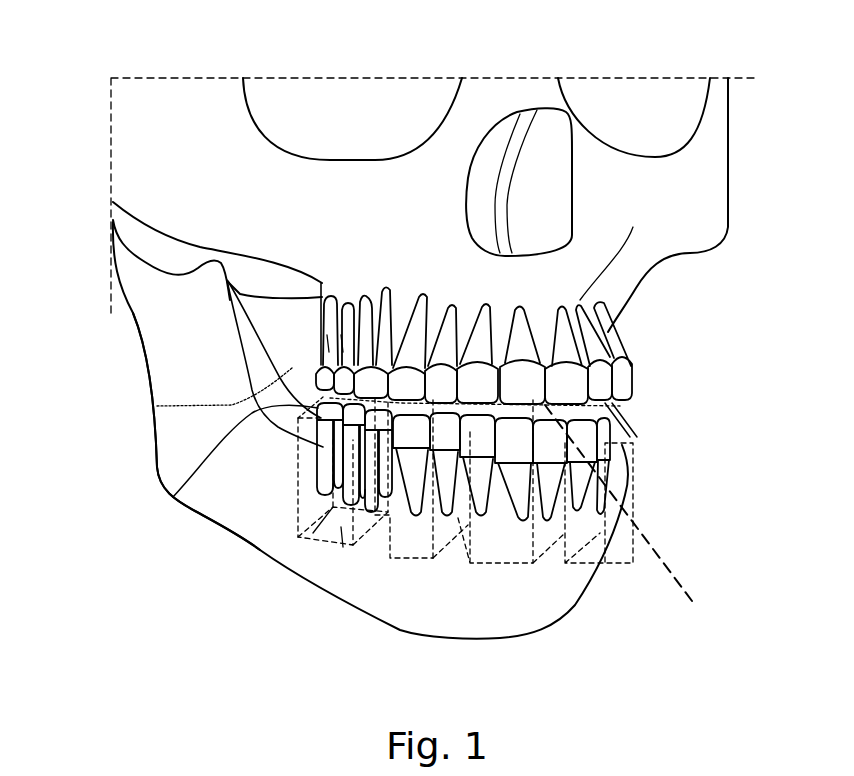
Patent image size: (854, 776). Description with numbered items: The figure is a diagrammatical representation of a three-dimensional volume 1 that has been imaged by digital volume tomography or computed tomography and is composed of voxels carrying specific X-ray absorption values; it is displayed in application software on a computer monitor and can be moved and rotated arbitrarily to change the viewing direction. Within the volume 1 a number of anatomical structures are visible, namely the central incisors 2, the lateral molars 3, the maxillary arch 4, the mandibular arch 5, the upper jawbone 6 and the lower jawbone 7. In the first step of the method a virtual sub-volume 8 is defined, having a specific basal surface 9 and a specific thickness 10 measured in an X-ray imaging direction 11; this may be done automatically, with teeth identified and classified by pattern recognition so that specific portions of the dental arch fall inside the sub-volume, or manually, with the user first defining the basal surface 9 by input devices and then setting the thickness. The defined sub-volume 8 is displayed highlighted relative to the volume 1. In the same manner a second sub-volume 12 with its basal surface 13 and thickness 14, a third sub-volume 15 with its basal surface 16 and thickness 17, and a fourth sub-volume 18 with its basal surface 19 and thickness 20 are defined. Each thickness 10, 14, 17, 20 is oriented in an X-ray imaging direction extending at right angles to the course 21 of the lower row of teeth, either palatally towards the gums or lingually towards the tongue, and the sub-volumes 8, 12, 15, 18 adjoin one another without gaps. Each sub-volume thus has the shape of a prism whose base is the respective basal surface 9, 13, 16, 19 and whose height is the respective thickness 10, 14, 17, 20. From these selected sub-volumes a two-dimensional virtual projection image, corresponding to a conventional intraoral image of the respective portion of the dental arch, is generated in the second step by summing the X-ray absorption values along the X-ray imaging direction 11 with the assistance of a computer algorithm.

The 3D volume 1 is at (156, 440).
The central incisors 2 is at (562, 303).
The lateral molars 3 is at (424, 302).
The maxillary arch 4 is at (518, 304).
The mandibular arch 5 is at (178, 500).
The upper jawbone 6 is at (300, 283).
The lower jawbone 7 is at (215, 337).
The virtual sub-volume 8 is at (633, 437).
The basal surface 9 is at (625, 487).
The thickness 10 is at (628, 418).
The X-ray imaging direction 11 is at (658, 553).
The second sub-volume 12 is at (483, 555).
The basal surface 13 is at (513, 553).
The thickness 14 is at (520, 547).
The third sub-volume 15 is at (418, 545).
The basal surface 16 is at (390, 547).
The thickness 17 is at (437, 533).
The fourth sub-volume 18 is at (318, 530).
The basal surface 19 is at (350, 535).
The thickness 20 is at (342, 527).
The course of the lower row of teeth 21 is at (157, 406).